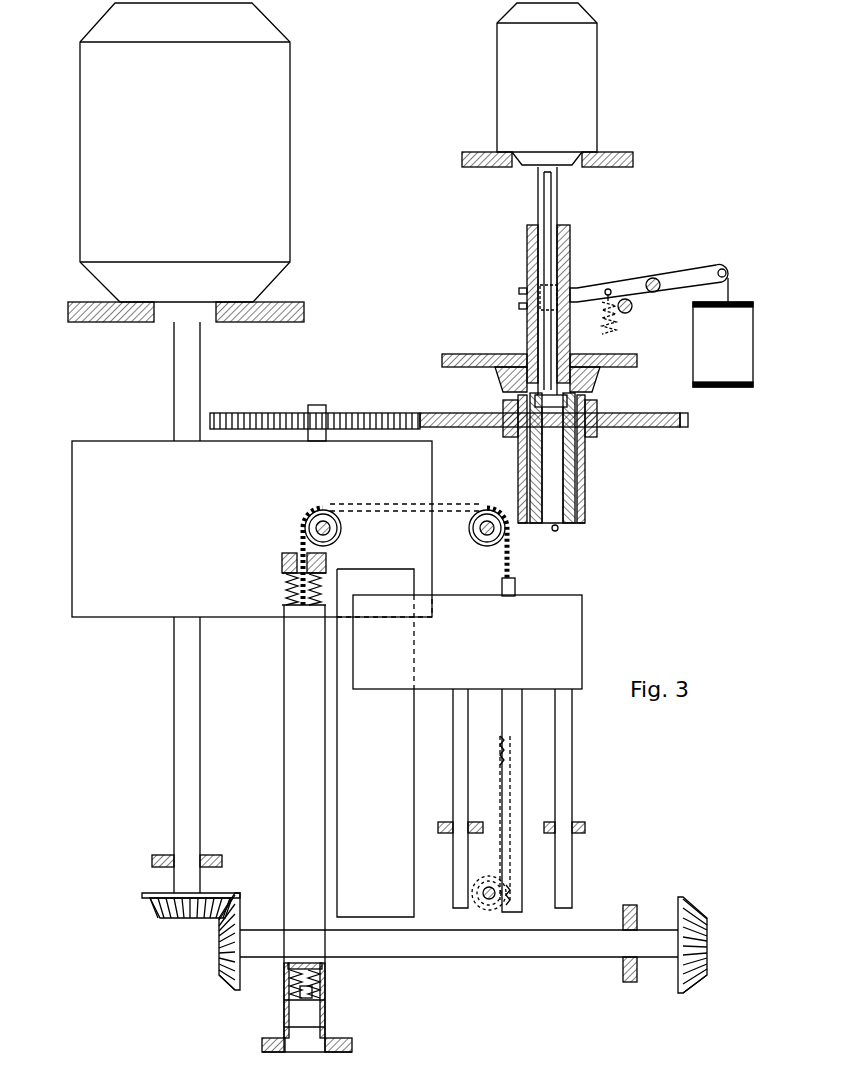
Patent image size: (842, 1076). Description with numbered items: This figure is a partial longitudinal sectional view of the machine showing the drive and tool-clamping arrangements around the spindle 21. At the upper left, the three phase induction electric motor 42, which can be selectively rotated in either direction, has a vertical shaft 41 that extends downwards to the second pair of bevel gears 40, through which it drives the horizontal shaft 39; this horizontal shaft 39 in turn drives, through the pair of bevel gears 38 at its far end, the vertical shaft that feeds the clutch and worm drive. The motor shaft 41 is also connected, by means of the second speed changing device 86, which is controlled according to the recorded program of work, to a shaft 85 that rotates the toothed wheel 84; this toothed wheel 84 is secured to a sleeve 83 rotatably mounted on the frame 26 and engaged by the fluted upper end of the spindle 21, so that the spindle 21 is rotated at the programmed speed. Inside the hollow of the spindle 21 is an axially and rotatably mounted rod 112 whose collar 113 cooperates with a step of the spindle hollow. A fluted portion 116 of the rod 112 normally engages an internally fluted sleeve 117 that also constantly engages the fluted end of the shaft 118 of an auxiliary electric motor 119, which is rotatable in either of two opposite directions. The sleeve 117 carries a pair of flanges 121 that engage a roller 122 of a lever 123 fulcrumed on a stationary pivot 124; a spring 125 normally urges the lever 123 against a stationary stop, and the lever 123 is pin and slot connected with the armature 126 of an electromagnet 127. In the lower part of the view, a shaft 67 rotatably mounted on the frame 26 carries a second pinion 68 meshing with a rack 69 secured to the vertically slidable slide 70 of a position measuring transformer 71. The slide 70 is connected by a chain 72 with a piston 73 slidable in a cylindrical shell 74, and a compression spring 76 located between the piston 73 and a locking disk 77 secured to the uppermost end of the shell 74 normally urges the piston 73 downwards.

The three phase induction electric motor 42 is at (290, 228).
The vertical shaft 41 is at (175, 804).
The shaft 85 is at (325, 411).
The toothed wheel 84 is at (460, 413).
The second speed changing device 86 is at (136, 445).
The chain 72 is at (330, 506).
The locking disk 77 is at (290, 556).
The compression spring 76 is at (284, 584).
The cylindrical shell 74 is at (268, 616).
The piston 73 is at (318, 1013).
The slide 70 is at (388, 686).
The position measuring transformer 71 is at (423, 696).
The rack 69 is at (518, 798).
The second pinion 68 is at (480, 905).
The shaft 67 is at (487, 886).
The horizontal shaft 39 is at (260, 928).
The second pair of bevel gears 40 is at (218, 944).
The pair of bevel gears 38 is at (704, 940).
The auxiliary electric motor 119 is at (592, 84).
The shaft 118 is at (549, 203).
The fluted portion 116 is at (546, 340).
The internally fluted sleeve 117 is at (566, 340).
The flanges 121 is at (519, 305).
The lever 123 is at (607, 286).
The stationary pivot 124 is at (653, 278).
The armature 126 is at (738, 260).
The electromagnet 127 is at (693, 342).
The roller 122 is at (604, 302).
The spring 125 is at (620, 316).
The frame 26 is at (456, 354).
The collar 113 is at (556, 402).
The sleeve 83 is at (519, 468).
The spindle 21 is at (571, 492).
The rod 112 is at (556, 508).